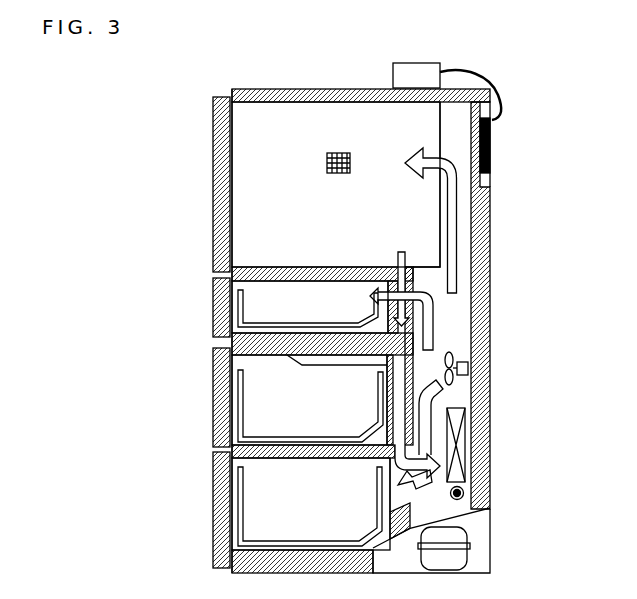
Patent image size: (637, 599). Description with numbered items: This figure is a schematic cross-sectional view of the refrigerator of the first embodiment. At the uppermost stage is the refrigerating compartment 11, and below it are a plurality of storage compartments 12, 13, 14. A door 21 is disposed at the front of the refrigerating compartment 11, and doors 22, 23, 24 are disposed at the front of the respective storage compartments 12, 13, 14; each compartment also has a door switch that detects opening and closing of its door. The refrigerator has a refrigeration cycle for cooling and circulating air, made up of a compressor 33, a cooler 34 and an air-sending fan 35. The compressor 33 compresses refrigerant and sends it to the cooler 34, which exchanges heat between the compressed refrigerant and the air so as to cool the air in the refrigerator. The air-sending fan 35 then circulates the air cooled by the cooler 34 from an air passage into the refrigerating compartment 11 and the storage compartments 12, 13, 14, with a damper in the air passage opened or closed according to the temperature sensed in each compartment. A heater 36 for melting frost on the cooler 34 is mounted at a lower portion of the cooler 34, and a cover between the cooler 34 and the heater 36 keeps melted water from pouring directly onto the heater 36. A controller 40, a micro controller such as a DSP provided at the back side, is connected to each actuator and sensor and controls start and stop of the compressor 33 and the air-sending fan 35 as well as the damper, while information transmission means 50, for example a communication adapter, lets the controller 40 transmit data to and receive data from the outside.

The refrigerating compartment 11 is at (301, 235).
The storage compartment 12 is at (301, 314).
The storage compartment 13 is at (299, 421).
The storage compartment 14 is at (300, 532).
The door 21 is at (220, 188).
The door 22 is at (220, 303).
The door 23 is at (220, 396).
The door 24 is at (220, 506).
The compressor 33 is at (338, 153).
The cooler 34 is at (460, 445).
The air-sending fan 35 is at (468, 370).
The heater 36 is at (463, 493).
The controller 40 is at (492, 152).
The information transmission means 50 is at (393, 75).